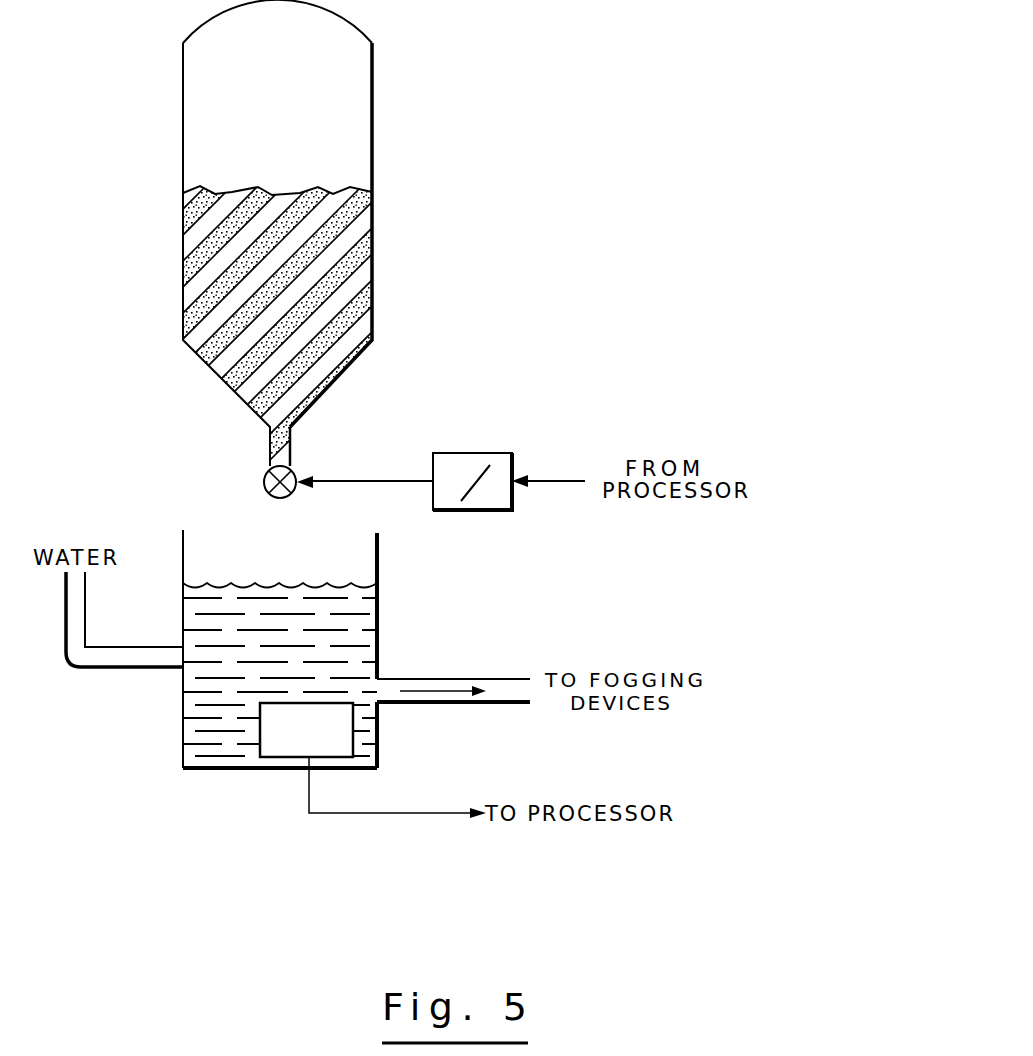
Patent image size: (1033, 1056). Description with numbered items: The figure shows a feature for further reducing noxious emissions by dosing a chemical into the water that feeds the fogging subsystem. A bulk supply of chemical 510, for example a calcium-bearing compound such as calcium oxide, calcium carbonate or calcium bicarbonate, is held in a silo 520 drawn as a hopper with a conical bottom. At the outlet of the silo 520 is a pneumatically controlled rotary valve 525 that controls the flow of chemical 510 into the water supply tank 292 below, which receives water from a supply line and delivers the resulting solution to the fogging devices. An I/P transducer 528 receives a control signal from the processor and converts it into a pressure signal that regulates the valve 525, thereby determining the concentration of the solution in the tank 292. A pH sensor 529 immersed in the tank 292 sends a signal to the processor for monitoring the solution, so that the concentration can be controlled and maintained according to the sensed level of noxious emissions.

The silo 520 is at (372, 130).
The chemical 510 is at (372, 263).
The pneumatically controlled rotary valve 525 is at (262, 477).
The I/P transducer 528 is at (446, 452).
The pH sensor 529 is at (354, 737).
The water supply tank 292 is at (238, 750).